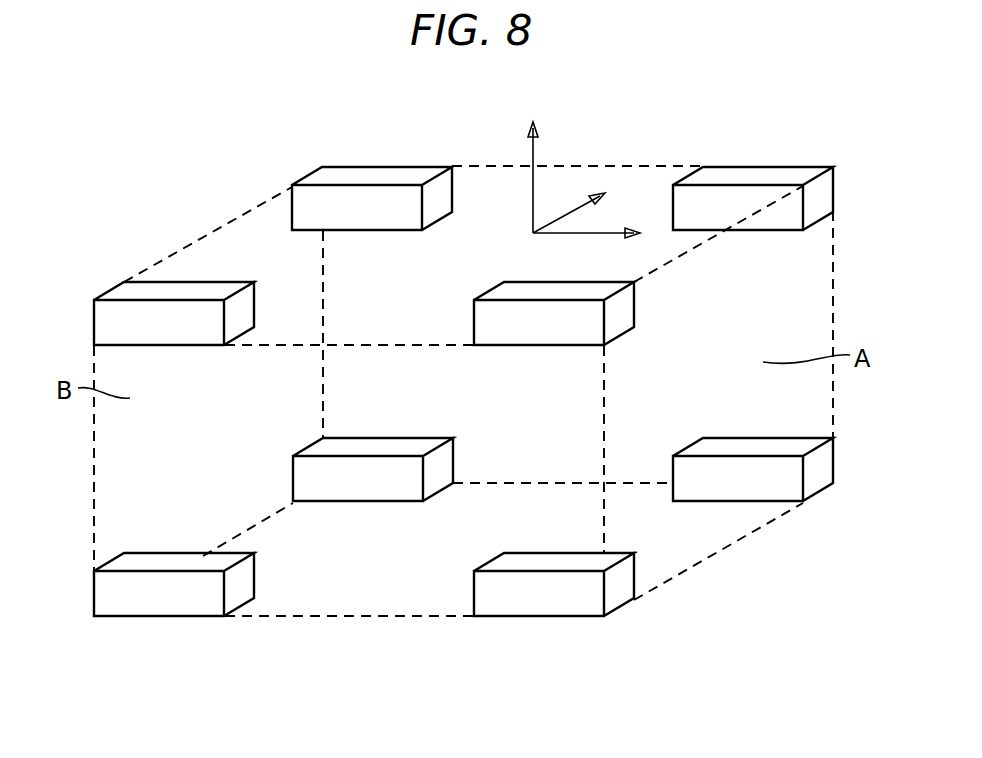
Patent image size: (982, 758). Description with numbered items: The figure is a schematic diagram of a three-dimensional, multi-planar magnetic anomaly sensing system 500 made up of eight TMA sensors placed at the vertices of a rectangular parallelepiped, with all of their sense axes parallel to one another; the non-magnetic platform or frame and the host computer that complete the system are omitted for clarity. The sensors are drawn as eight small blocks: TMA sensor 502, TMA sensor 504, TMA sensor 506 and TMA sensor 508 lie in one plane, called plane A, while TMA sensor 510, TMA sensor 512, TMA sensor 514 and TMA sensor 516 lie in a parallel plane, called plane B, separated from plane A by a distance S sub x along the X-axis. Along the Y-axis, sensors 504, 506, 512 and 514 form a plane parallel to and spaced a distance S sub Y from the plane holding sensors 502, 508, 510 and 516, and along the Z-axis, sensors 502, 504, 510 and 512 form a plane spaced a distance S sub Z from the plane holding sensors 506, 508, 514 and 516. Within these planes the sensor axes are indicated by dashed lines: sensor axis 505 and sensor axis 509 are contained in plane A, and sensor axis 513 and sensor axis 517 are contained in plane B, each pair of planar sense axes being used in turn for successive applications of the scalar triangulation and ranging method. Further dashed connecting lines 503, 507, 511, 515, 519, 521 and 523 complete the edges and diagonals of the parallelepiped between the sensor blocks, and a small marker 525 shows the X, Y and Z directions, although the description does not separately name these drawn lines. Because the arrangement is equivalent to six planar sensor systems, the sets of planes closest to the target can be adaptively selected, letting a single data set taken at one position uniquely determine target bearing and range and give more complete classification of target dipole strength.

The three-dimensional magnetic anomaly sensing system 500 is at (176, 132).
The TMA sensor 502 is at (752, 446).
The dashed connection line 503 is at (732, 545).
The TMA sensor 504 is at (538, 605).
The sensor axis 505 is at (606, 406).
The TMA sensor 506 is at (535, 338).
The dashed connection line 507 is at (698, 246).
The TMA sensor 508 is at (770, 172).
The sensor axis 509 is at (836, 303).
The TMA sensor 510 is at (372, 490).
The dashed connection line 511 is at (235, 533).
The TMA sensor 512 is at (162, 610).
The sensor axis 513 is at (90, 456).
The TMA sensor 514 is at (102, 328).
The dashed connection line 515 is at (216, 228).
The TMA sensor 516 is at (365, 172).
The sensor axis 517 is at (328, 288).
The dashed connection line 519 is at (535, 480).
The dashed connection line 521 is at (350, 620).
The dashed connection line 523 is at (410, 349).
The coordinate axes 525 is at (566, 164).